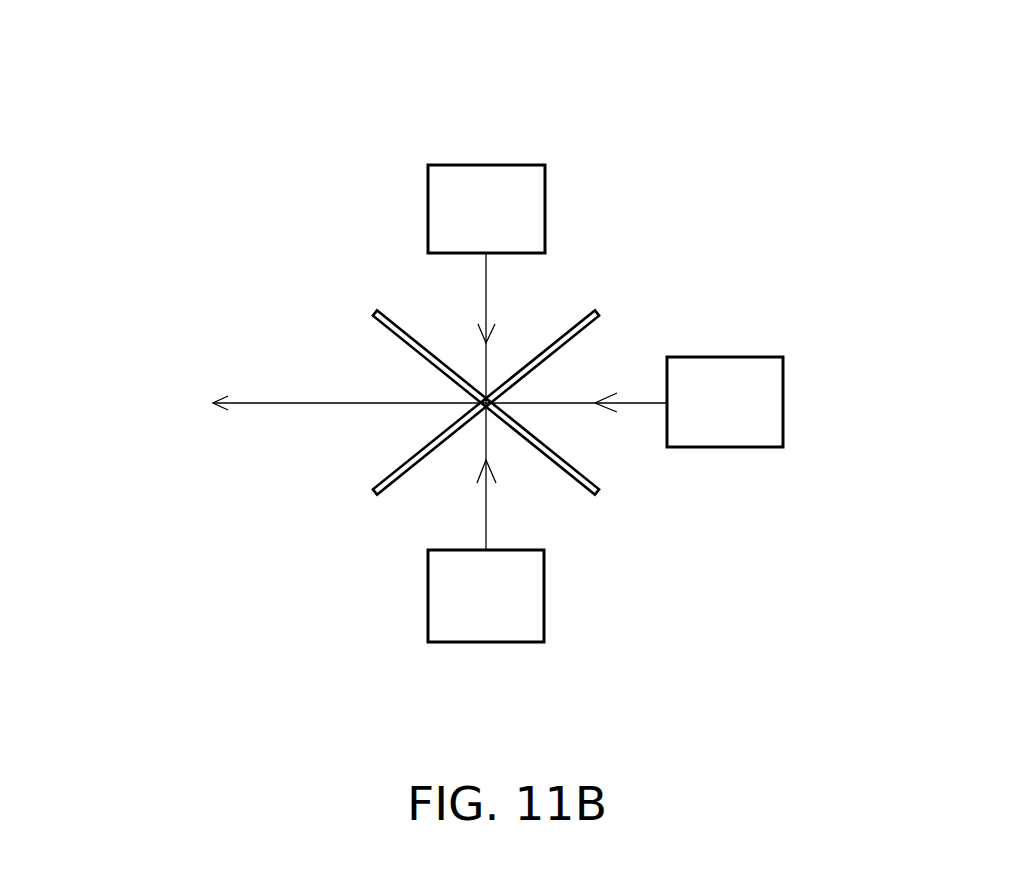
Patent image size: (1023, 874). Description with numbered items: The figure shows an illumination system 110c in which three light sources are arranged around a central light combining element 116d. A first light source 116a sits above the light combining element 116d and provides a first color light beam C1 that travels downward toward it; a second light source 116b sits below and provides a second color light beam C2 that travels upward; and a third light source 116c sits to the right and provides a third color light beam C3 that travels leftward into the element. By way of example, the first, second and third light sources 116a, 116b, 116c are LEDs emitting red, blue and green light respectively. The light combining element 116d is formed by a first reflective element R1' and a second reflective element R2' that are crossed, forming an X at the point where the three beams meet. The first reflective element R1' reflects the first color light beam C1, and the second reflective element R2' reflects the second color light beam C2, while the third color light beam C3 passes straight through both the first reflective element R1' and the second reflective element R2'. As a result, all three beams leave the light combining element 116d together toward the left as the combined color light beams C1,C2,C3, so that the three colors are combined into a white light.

The illumination system 110c is at (820, 664).
The first light source 116a is at (485, 190).
The second light source 116b is at (515, 597).
The third light source 116c is at (738, 418).
The light combining element 116d is at (755, 80).
The first reflective element R1' is at (520, 291).
The second reflective element R2' is at (569, 291).
The first color light beam C1 is at (486, 285).
The second color light beam C2 is at (487, 523).
The third color light beam C3 is at (643, 403).
The combined color light beams C1,C2,C3 is at (295, 402).